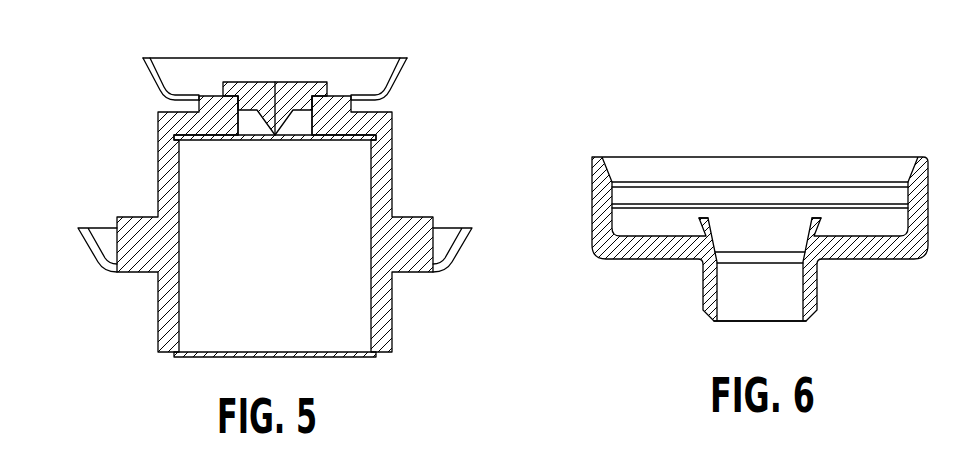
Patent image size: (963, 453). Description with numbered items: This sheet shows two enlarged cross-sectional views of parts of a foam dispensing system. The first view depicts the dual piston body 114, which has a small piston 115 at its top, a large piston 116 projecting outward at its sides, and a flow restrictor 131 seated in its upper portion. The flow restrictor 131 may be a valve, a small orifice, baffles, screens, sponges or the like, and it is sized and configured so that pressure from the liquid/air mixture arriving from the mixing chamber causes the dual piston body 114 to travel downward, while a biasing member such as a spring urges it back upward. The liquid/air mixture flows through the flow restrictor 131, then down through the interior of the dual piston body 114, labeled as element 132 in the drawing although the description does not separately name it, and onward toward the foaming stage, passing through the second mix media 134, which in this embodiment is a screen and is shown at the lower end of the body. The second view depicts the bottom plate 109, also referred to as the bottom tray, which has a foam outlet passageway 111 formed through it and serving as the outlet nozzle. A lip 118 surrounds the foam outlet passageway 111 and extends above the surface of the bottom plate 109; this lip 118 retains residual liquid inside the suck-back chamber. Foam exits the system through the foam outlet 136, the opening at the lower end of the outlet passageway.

In FIG. 5, the dual piston body 114 is at (167, 182).
In FIG. 5, the small piston 115 is at (400, 80).
In FIG. 5, the large piston 116 is at (88, 251).
In FIG. 5, the flow restrictor 131 is at (283, 124).
In FIG. 5, the chamber 132 is at (327, 287).
In FIG. 5, the second mix media 134 is at (348, 357).
In FIG. 6, the bottom plate 109 is at (601, 199).
In FIG. 6, the lip 118 is at (703, 217).
In FIG. 6, the foam outlet passageway 111 is at (738, 293).
In FIG. 6, the foam outlet 136 is at (733, 322).